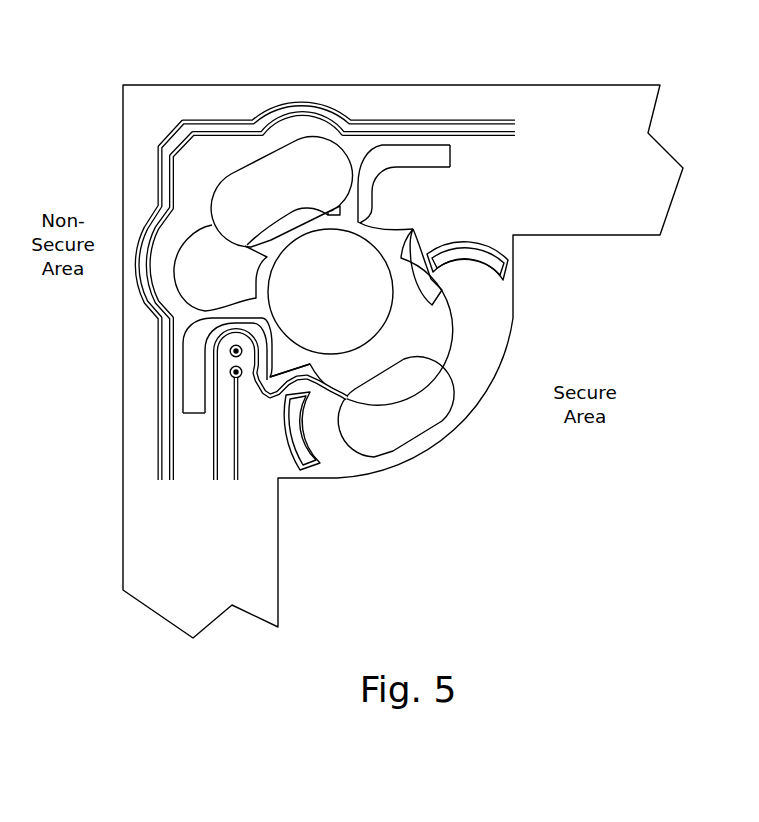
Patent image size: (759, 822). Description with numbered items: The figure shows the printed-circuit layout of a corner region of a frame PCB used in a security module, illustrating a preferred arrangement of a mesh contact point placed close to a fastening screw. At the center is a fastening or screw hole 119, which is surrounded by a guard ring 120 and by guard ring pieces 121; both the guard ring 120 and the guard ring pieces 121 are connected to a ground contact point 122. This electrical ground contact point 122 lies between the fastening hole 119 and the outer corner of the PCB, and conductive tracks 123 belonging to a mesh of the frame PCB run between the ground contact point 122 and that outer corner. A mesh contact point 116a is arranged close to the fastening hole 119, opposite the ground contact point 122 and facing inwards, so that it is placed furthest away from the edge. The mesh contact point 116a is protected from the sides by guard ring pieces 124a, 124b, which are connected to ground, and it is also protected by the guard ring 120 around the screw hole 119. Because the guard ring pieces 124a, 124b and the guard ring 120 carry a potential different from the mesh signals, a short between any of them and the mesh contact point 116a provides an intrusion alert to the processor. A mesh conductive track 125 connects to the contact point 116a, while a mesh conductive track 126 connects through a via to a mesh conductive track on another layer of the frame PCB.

The mesh contact point 116a is at (412, 413).
The fastening hole 119 is at (360, 317).
The guard ring 120 is at (415, 228).
The guard ring pieces 121 is at (422, 157).
The ground contact point 122 is at (264, 190).
The conductive tracks 123 is at (157, 402).
The guard ring piece 124a is at (320, 446).
The guard ring piece 124b is at (497, 272).
The mesh conductive track 125 is at (205, 432).
The mesh conductive track 126 is at (235, 468).